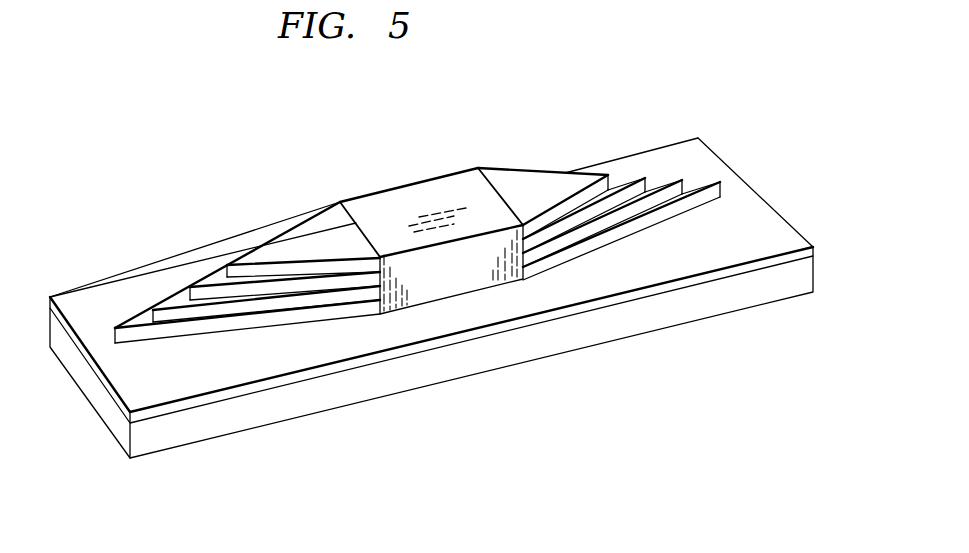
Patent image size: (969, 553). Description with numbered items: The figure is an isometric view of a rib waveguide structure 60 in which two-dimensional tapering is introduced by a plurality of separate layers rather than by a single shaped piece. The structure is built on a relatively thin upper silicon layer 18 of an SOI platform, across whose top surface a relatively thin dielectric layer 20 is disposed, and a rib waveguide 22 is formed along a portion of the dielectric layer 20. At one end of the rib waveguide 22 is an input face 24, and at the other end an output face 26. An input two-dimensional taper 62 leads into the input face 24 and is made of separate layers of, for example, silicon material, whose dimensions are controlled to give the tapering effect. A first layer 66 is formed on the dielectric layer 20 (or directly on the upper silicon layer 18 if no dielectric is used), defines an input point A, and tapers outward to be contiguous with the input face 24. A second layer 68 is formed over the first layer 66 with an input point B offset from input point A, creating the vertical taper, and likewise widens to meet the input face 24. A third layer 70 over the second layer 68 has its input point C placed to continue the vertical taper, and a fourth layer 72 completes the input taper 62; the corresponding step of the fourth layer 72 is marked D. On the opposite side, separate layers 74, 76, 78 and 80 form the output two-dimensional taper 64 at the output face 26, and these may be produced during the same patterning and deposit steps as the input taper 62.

The upper silicon layer 18 is at (803, 277).
The dielectric layer 20 is at (788, 236).
The rib waveguide 22 is at (420, 211).
The input face 24 is at (353, 232).
The output face 26 is at (508, 197).
The rib waveguide structure 60 is at (465, 308).
The input two-dimensional taper 62 is at (293, 238).
The output two-dimensional taper 64 is at (557, 178).
The first layer 66 is at (215, 380).
The second layer 68 is at (234, 366).
The third layer 70 is at (251, 349).
The fourth layer 72 is at (269, 332).
The separate layer 74 is at (653, 217).
The separate layer 76 is at (612, 217).
The separate layer 78 is at (570, 218).
The separate layer 80 is at (535, 223).
The input point A is at (117, 327).
The input point B is at (153, 310).
The input point C is at (190, 287).
The step D is at (227, 265).